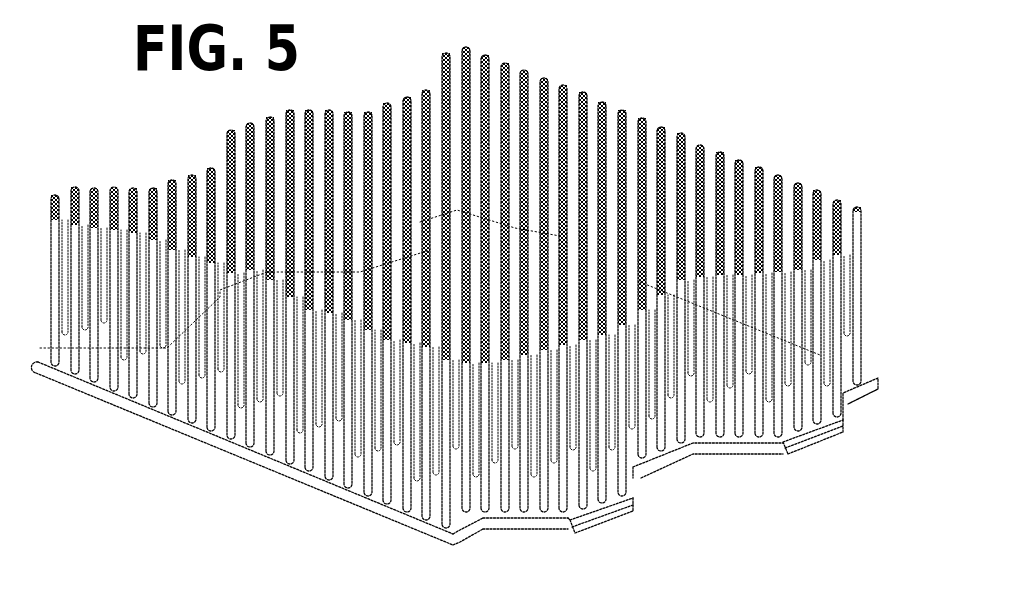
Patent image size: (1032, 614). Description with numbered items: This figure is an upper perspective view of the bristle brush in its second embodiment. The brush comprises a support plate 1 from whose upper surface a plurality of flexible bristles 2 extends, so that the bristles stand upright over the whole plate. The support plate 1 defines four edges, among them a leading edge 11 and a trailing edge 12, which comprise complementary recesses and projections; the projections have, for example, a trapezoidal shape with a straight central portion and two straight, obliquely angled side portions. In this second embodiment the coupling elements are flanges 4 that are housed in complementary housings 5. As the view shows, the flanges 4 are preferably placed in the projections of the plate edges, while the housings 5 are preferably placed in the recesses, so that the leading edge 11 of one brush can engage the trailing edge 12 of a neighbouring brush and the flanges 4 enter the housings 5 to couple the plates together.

The support plate 1 is at (210, 438).
The flexible bristles 2 is at (660, 153).
The flanges 4 is at (800, 452).
The housings 5 is at (470, 527).
The leading edge 11 is at (838, 455).
The trailing edge 12 is at (37, 335).